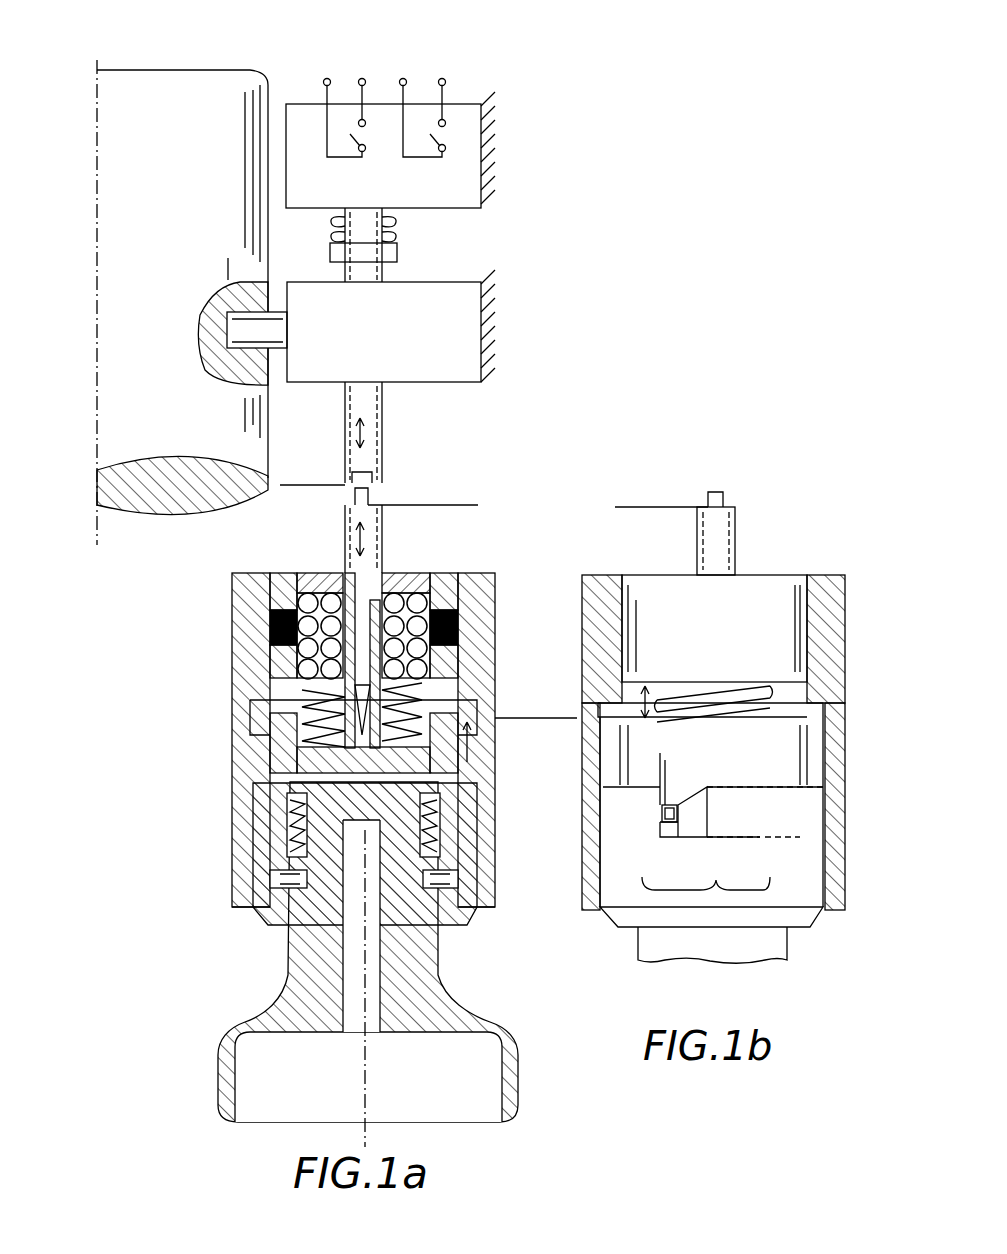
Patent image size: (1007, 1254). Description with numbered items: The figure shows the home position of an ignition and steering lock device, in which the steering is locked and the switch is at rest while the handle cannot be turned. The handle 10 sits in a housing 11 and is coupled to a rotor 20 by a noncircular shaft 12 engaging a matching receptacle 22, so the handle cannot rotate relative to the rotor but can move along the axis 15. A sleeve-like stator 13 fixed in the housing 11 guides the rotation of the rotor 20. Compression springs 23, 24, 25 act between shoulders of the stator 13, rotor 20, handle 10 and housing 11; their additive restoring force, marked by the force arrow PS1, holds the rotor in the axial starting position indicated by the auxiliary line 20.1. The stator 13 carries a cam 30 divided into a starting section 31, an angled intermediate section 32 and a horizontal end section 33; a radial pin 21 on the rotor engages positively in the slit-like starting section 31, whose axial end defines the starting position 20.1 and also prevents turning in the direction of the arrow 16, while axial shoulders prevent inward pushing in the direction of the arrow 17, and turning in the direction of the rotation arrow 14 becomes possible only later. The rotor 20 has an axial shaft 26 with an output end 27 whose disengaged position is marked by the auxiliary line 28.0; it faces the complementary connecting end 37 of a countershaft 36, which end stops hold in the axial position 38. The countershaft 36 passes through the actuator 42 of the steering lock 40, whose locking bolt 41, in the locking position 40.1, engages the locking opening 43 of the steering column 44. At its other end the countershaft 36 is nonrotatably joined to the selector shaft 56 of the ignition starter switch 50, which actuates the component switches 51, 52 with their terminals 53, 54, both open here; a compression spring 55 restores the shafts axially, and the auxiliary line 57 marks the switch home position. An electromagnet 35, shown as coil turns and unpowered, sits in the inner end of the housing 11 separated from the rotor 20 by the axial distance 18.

In FIG. 1A, the handle 10 is at (222, 1025).
In FIG. 1A, the housing 11 is at (257, 617).
In FIG. 1B, the housing 11 is at (602, 602).
In FIG. 1A, the shaft 12 is at (325, 825).
In FIG. 1A, the stator 13 is at (270, 888).
In FIG. 1B, the stator 13 is at (626, 880).
In FIG. 1A, the rotation arrow 14 is at (365, 1063).
In FIG. 1A, the axis 15 is at (360, 975).
In FIG. 1A, the arrow 16 is at (365, 1063).
In FIG. 1A, the arrow 17 is at (356, 1048).
In FIG. 1B, the axial distance 18 is at (600, 703).
In FIG. 1A, the rotor 20 is at (272, 746).
In FIG. 1B, the rotor 20 is at (723, 766).
In FIG. 1A, the starting position 20.1 is at (518, 722).
In FIG. 1B, the starting position 20.1 is at (710, 805).
In FIG. 1B, the pin 21 is at (662, 813).
In FIG. 1A, the receptacle 22 is at (300, 808).
In FIG. 1A, the compression spring 23 is at (470, 885).
In FIG. 1A, the compression spring 24 is at (470, 833).
In FIG. 1A, the compression spring 25 is at (300, 686).
In FIG. 1A, the axial shaft 26 is at (345, 578).
In FIG. 1A, the output end 27 is at (368, 497).
In FIG. 1B, the output end 27 is at (723, 495).
In FIG. 1A, the auxiliary line 28.0 is at (455, 505).
In FIG. 1B, the auxiliary line 28.0 is at (637, 507).
In FIG. 1B, the cam 30 is at (716, 892).
In FIG. 1B, the starting section 31 is at (663, 840).
In FIG. 1B, the intermediate section 32 is at (690, 840).
In FIG. 1B, the end section 33 is at (745, 840).
In FIG. 1A, the electromagnet 35 is at (405, 580).
In FIG. 1B, the electromagnet 35 is at (722, 630).
In FIG. 1A, the countershaft 36 is at (360, 397).
In FIG. 1A, the connecting end 37 is at (372, 471).
In FIG. 1A, the axial position 38 is at (294, 484).
In FIG. 1A, the steering lock 40 is at (462, 327).
In FIG. 1A, the locking position 40.1 is at (228, 270).
In FIG. 1A, the locking bolt 41 is at (273, 348).
In FIG. 1A, the actuator 42 is at (458, 350).
In FIG. 1A, the locking opening 43 is at (232, 336).
In FIG. 1A, the steering column 44 is at (135, 444).
In FIG. 1A, the ignition starter switch 50 is at (458, 178).
In FIG. 1A, the component switch 51 is at (448, 134).
In FIG. 1A, the component switch 52 is at (366, 130).
In FIG. 1A, the terminals 53 is at (403, 79).
In FIG. 1A, the terminal 54 is at (327, 79).
In FIG. 1A, the compression spring 55 is at (400, 240).
In FIG. 1A, the selector shaft 56 is at (388, 218).
In FIG. 1B, the auxiliary line 57 is at (655, 768).
In FIG. 1A, the restoring force PS1 is at (445, 692).